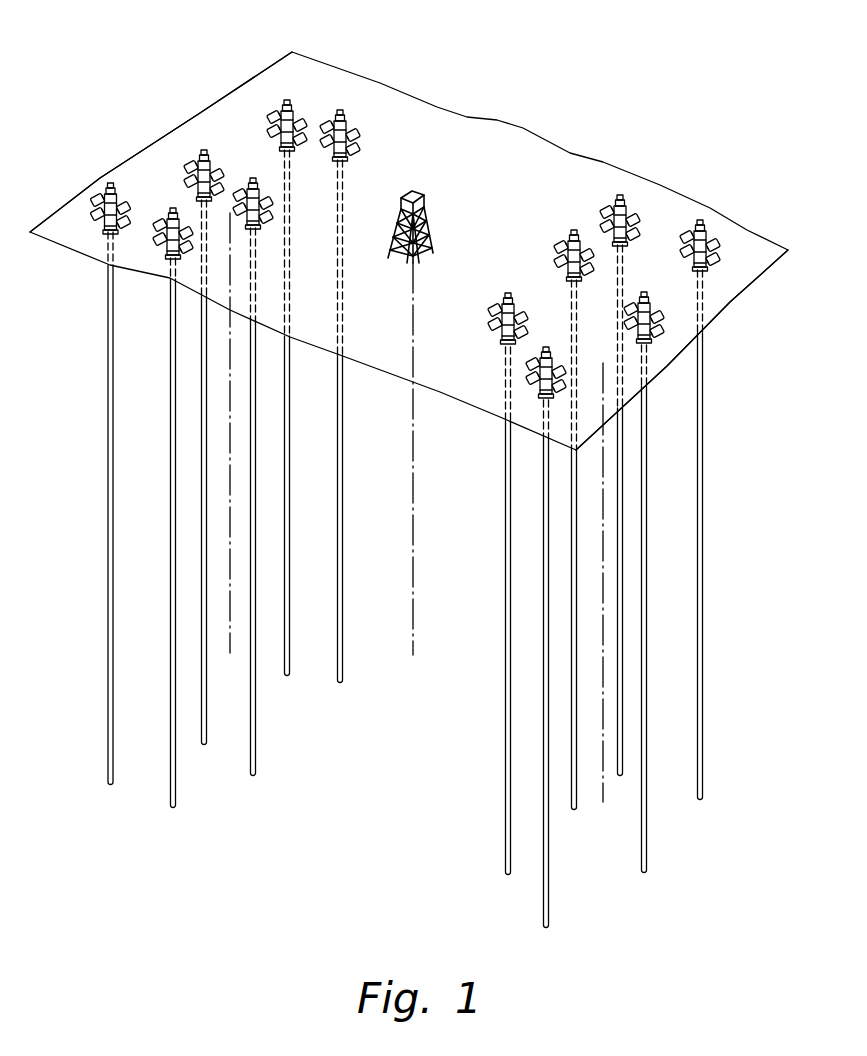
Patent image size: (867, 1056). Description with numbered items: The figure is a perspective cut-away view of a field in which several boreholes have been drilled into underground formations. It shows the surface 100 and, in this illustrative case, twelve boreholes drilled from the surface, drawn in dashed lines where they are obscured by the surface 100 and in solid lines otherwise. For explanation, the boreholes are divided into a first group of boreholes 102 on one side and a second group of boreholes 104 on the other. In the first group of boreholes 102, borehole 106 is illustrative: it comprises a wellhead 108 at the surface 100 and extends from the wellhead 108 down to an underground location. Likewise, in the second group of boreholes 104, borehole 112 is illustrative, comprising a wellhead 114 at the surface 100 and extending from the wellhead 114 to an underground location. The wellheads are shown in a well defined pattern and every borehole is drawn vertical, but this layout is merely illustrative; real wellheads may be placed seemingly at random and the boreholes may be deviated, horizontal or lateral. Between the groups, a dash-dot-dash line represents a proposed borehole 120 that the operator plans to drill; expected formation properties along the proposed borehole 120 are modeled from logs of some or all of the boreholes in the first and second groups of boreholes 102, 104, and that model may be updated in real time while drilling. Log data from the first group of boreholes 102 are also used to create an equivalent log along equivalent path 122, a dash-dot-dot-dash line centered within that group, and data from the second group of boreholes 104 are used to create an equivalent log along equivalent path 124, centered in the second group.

The surface 100 is at (498, 142).
The first group of boreholes 102 is at (198, 76).
The second group of boreholes 104 is at (700, 172).
The borehole 106 is at (110, 480).
The wellhead 108 is at (117, 195).
The borehole 112 is at (485, 557).
The wellhead 114 is at (496, 302).
The proposed borehole 120 is at (413, 493).
The equivalent path 122 is at (229, 420).
The equivalent path 124 is at (603, 670).